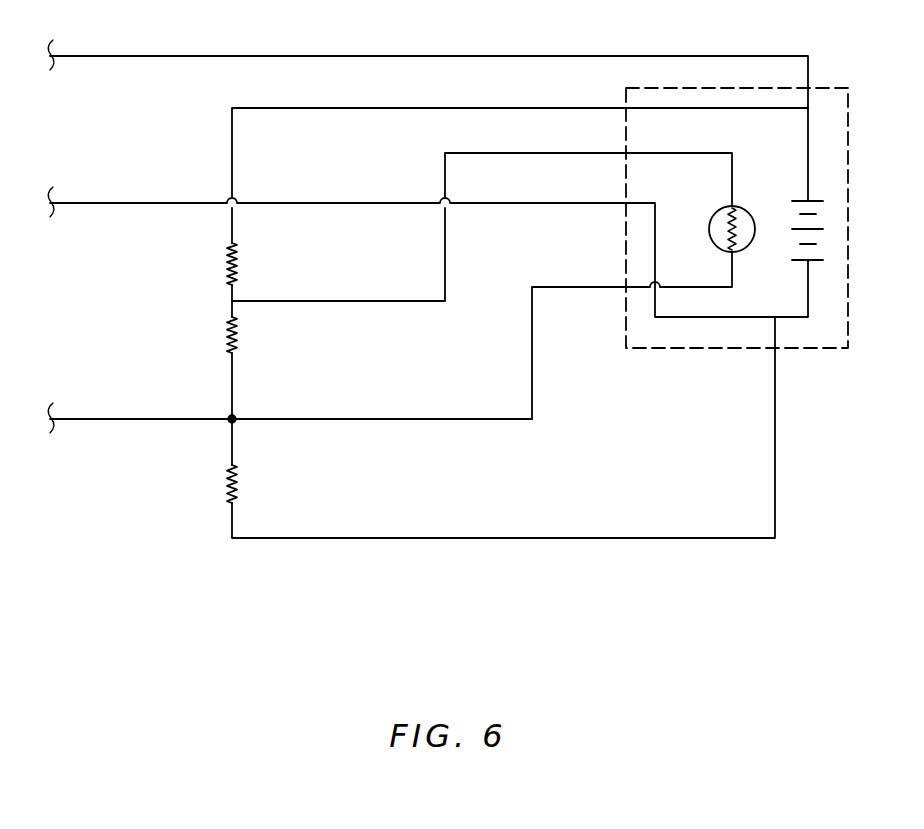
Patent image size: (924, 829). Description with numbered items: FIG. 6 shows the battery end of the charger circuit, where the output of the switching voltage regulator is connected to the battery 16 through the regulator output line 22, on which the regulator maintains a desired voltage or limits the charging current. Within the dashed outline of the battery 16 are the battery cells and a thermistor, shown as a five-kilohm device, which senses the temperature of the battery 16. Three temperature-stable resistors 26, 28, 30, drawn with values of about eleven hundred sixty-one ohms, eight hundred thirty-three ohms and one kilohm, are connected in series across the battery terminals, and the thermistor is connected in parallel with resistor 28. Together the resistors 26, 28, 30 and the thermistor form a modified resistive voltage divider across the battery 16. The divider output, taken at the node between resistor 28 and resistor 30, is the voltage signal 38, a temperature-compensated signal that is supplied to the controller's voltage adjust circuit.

The battery 16 is at (848, 200).
The regulator output line 22 is at (112, 56).
The temperature stable resistor 26 is at (227, 265).
The temperature stable resistor 28 is at (227, 338).
The temperature stable resistor 30 is at (227, 486).
The voltage signal 38 is at (107, 417).